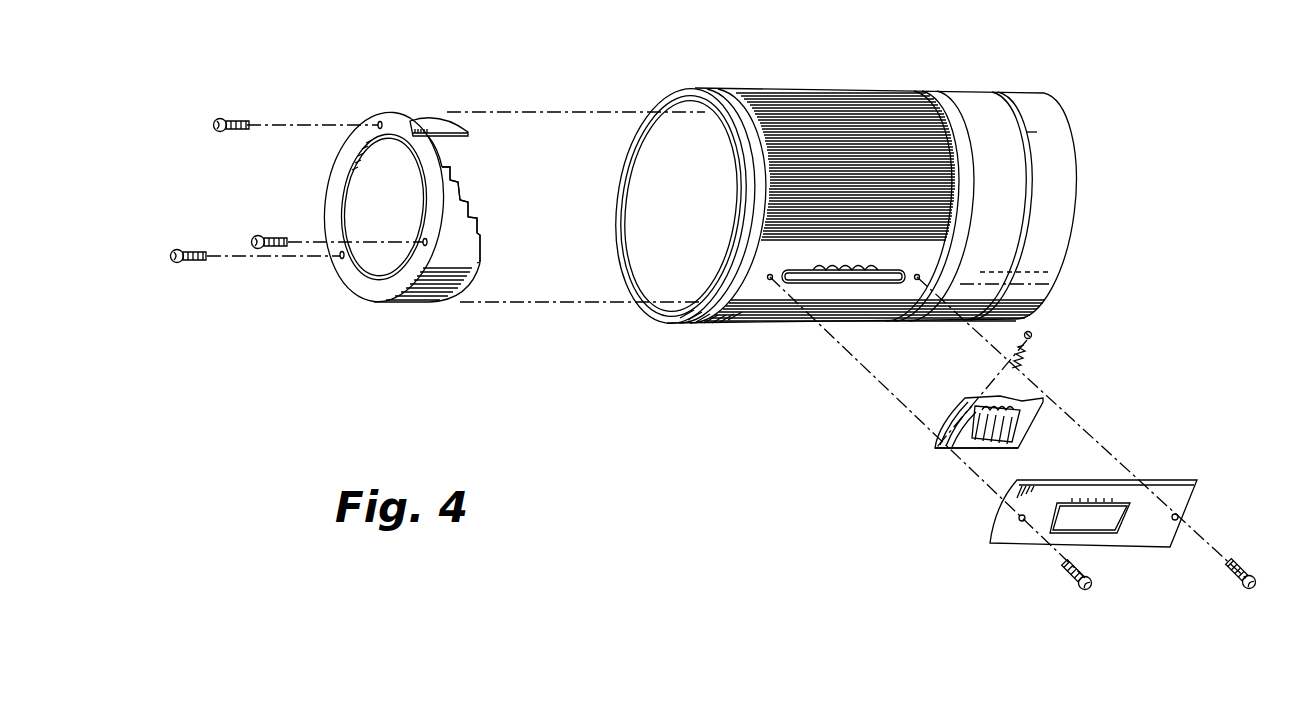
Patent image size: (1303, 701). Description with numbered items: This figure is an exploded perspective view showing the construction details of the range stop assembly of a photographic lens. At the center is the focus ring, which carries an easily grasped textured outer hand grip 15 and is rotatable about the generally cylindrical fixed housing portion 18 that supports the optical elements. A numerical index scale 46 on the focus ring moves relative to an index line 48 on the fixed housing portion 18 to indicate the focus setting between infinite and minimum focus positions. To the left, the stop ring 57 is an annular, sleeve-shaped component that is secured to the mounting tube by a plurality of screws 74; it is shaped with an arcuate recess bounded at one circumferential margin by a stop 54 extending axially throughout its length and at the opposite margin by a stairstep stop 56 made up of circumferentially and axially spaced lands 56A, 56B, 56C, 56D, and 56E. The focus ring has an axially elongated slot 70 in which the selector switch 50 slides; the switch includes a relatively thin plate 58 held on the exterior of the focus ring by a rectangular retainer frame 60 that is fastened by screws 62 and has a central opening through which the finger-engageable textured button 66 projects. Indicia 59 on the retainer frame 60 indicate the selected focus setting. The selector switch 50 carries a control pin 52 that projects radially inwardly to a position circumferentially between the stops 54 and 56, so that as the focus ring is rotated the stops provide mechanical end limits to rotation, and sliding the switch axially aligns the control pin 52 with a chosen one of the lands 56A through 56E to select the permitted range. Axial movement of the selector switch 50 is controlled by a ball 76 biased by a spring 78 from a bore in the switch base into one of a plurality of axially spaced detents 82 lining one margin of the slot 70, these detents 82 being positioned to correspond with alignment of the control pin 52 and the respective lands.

The textured outer hand grip 15 is at (808, 110).
The fixed housing portion 18 is at (1055, 248).
The numerical index scale 46 is at (1033, 173).
The index line 48 is at (1028, 130).
The selector switch 50 is at (996, 424).
The control pin 52 is at (992, 402).
The stop 54 is at (437, 130).
The stop 56 is at (455, 231).
The land 56A is at (480, 263).
The land 56B is at (482, 231).
The land 56C is at (472, 213).
The land 56D is at (462, 191).
The land 56E is at (456, 172).
The stop ring 57 is at (428, 301).
The plate 58 is at (940, 452).
The indicia 59 is at (1107, 485).
The retainer frame 60 is at (1117, 482).
The screws 62 is at (1243, 565).
The textured button 66 is at (983, 444).
The slot 70 is at (833, 281).
The screws 74 is at (237, 122).
The ball 76 is at (1032, 336).
The spring 78 is at (1024, 358).
The detents 82 is at (842, 268).